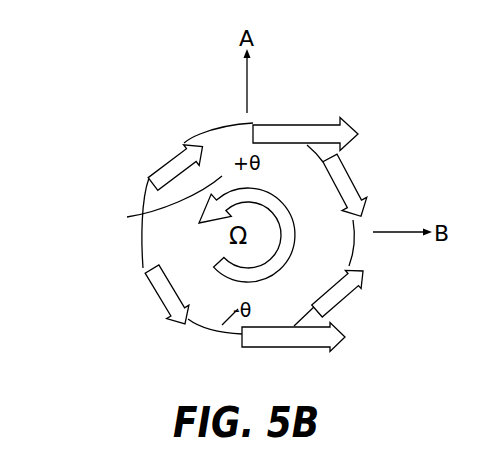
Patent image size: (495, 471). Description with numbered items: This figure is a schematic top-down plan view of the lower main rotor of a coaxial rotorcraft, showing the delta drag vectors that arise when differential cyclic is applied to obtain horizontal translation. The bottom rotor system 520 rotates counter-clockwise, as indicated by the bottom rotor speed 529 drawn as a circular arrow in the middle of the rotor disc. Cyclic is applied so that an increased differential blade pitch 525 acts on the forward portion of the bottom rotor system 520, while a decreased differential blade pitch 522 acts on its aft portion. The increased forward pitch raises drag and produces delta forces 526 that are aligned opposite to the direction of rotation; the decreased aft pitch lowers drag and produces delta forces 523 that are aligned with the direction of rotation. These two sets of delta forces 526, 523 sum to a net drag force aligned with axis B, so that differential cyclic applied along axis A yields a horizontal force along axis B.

The bottom rotor system 520 is at (352, 86).
The decreased differential blade pitch 522 is at (242, 336).
The delta forces 523 is at (273, 347).
The increased differential blade pitch 525 is at (153, 203).
The delta forces 526 is at (171, 153).
The bottom rotor speed 529 is at (190, 230).